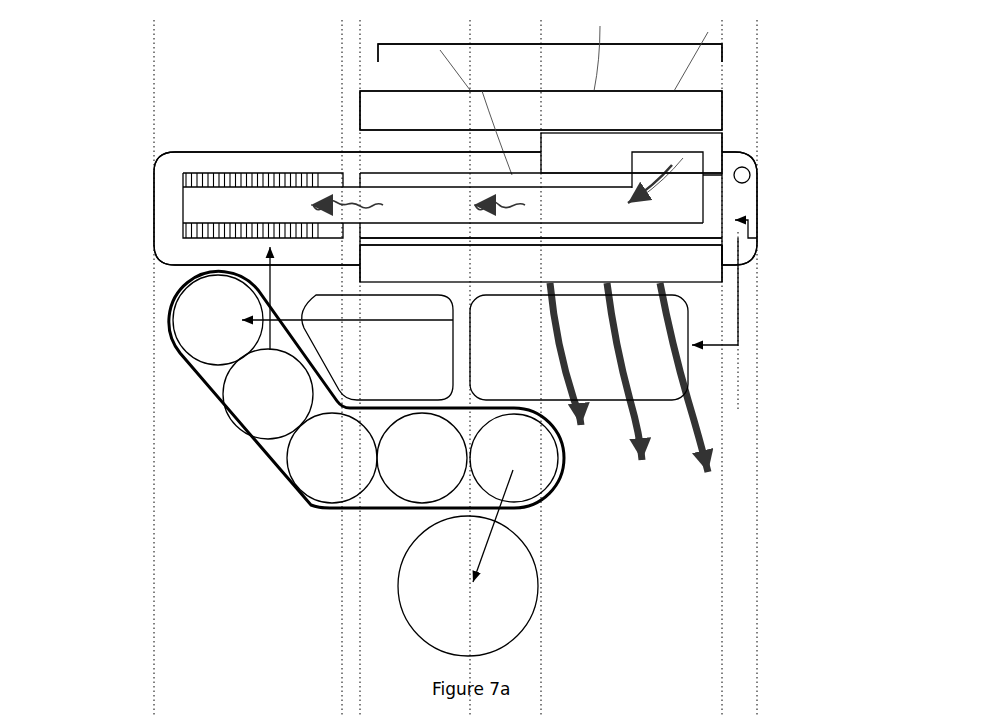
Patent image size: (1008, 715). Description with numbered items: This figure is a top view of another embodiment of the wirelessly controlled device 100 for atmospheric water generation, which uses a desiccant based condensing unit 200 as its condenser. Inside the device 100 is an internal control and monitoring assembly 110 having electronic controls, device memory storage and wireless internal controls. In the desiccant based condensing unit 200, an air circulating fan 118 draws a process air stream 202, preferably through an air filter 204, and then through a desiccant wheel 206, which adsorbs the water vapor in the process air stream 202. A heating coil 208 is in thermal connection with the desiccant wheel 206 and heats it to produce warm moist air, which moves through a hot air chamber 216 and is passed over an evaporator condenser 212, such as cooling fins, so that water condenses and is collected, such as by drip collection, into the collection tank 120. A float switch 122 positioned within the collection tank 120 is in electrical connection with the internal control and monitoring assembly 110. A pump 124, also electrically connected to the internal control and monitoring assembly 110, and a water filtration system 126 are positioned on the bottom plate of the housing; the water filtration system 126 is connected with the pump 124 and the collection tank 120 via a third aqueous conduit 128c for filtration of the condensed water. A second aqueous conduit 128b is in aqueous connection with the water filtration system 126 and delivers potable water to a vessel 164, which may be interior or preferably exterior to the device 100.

The wirelessly controlled device 100 is at (585, 20).
The desiccant based condensing unit 200 is at (405, 43).
The process air stream 202 is at (728, 58).
The air filter 204 is at (703, 109).
The heating coil 208 is at (719, 150).
The float switch 122 is at (750, 175).
The hot air chamber 216 is at (681, 198).
The collection tank 120 is at (172, 249).
The desiccant wheel 206 is at (762, 240).
The air circulating fan 118 is at (697, 268).
The third aqueous conduit 128c is at (744, 295).
The pump 124 is at (692, 320).
The internal control and monitoring assembly 110 is at (425, 369).
The evaporator condenser 212 is at (173, 183).
The water filtration system 126 is at (268, 452).
The second aqueous conduit 128b is at (500, 515).
The vessel 164 is at (411, 589).